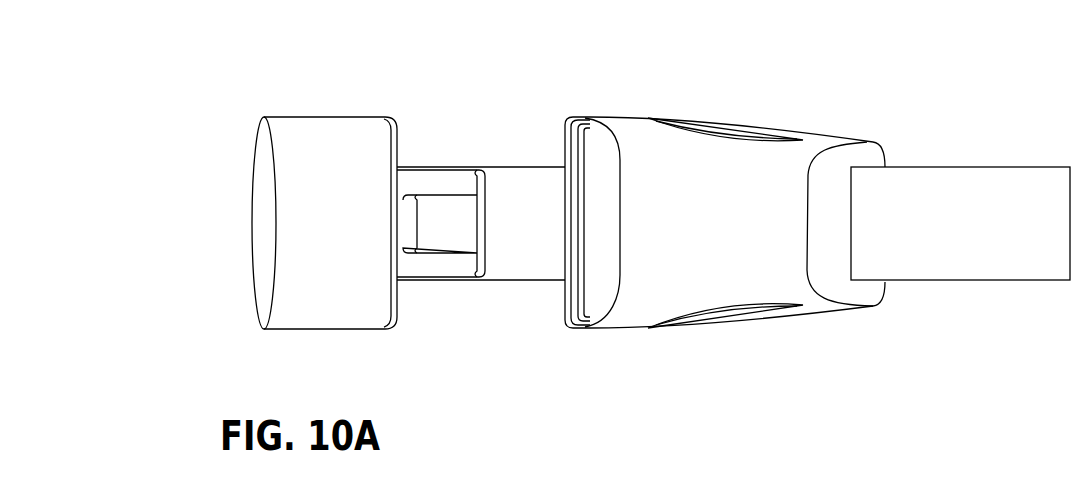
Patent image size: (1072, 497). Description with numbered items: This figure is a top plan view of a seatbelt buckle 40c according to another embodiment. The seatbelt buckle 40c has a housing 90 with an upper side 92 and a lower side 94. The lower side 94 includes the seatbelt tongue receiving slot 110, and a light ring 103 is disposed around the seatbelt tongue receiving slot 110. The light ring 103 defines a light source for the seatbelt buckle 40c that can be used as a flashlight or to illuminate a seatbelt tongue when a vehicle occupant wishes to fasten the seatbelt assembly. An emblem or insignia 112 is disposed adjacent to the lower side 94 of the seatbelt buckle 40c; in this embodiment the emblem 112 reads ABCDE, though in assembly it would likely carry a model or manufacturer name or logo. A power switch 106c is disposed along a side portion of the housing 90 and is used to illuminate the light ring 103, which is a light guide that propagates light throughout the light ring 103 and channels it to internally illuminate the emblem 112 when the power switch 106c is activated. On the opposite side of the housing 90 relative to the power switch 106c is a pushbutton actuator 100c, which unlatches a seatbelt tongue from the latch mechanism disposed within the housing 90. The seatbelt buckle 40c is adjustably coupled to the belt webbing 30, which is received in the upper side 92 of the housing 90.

The seatbelt buckle 40c is at (684, 97).
The power switch 106c is at (765, 137).
The pushbutton actuator 100c is at (738, 322).
The housing 90 is at (838, 133).
The upper side 92 is at (885, 290).
The belt webbing 30 is at (1000, 265).
The seatbelt tongue receiving slot 110 is at (577, 260).
The light ring 103 is at (585, 282).
The lower side 94 is at (565, 315).
The emblem or insignia 112 is at (615, 242).